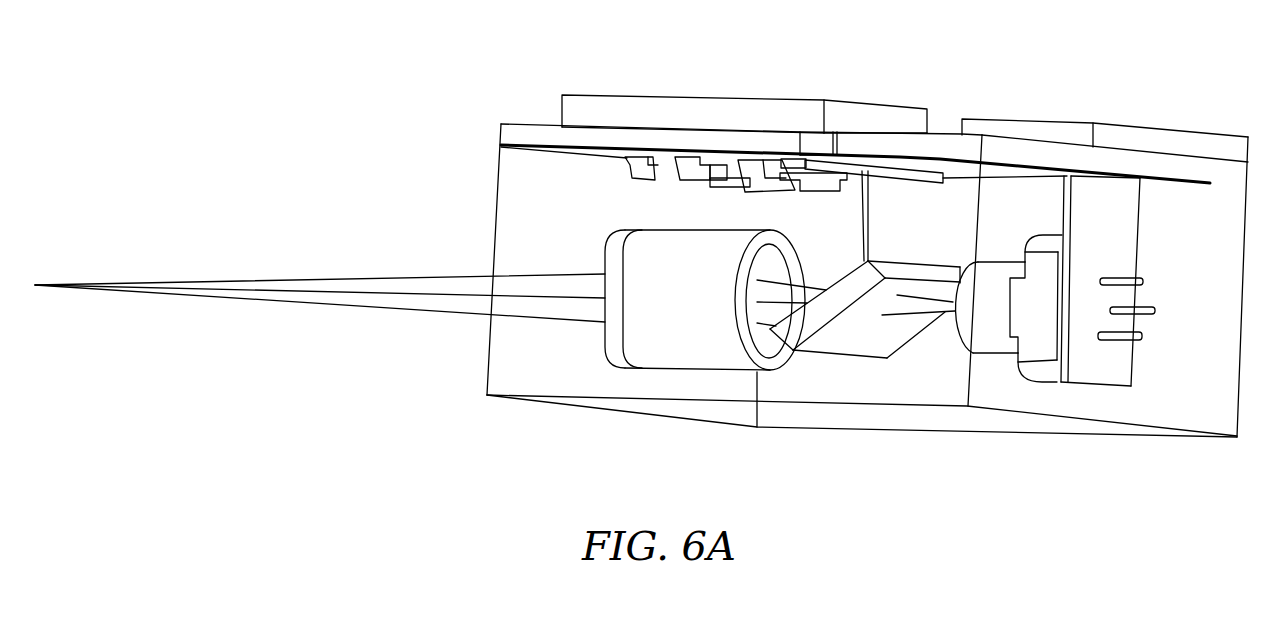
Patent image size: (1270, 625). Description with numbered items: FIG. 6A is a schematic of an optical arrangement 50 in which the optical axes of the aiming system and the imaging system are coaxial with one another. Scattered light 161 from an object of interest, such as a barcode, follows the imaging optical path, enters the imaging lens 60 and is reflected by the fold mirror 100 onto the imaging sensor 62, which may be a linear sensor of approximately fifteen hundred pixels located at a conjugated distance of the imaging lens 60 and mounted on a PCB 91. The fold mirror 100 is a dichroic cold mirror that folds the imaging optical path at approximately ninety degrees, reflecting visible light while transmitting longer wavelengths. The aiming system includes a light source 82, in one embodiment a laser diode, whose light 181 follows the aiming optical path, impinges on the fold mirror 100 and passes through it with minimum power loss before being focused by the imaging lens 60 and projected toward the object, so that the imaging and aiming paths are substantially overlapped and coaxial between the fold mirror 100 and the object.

The imaging module / scanner engine 50 is at (305, 75).
The imaging lens 60 is at (690, 348).
The imaging sensor 62 is at (886, 168).
The light source 82 is at (980, 310).
The printed circuit board (PCB) 91 is at (676, 95).
The fold mirror 100 is at (870, 335).
The scattered light 161 is at (312, 292).
The light from the light source 181 is at (1147, 125).